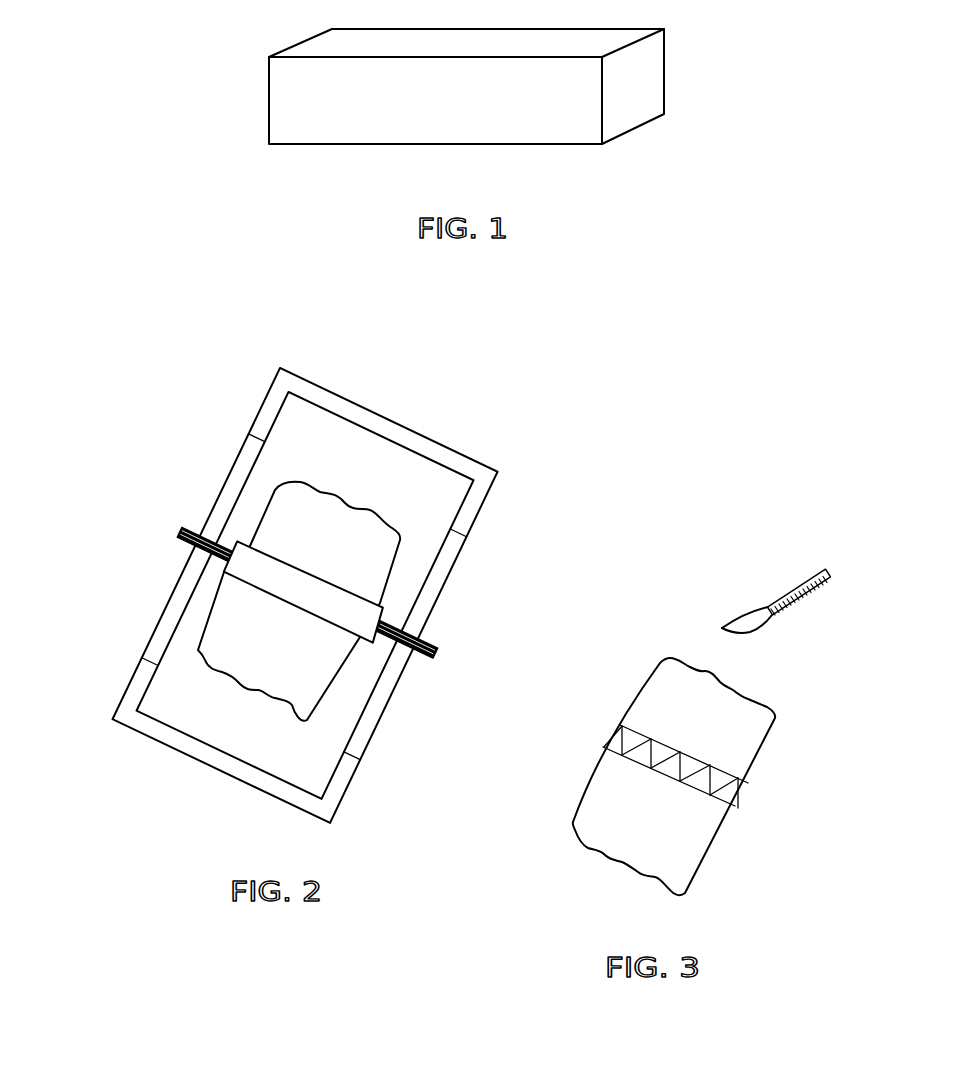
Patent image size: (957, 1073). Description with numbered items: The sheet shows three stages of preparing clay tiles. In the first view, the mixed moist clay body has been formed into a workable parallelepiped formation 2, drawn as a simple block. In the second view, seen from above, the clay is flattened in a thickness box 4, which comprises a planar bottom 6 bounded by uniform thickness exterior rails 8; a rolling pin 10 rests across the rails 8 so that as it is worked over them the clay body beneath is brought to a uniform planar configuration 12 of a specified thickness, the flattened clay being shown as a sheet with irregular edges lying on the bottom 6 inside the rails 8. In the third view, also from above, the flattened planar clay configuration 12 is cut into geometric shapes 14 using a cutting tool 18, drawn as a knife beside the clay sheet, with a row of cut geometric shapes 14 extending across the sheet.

In FIG. 1, the workable parallelepiped formation 2 is at (643, 71).
In FIG. 2, the thickness box 4 is at (356, 592).
In FIG. 2, the planar bottom 6 is at (305, 595).
In FIG. 2, the uniform thickness exterior rails 8 is at (305, 595).
In FIG. 2, the rolling pin 10 is at (373, 618).
In FIG. 2, the uniform planar configuration 12 is at (172, 707).
In FIG. 3, the uniform planar configuration 12 is at (705, 835).
In FIG. 3, the geometric shapes 14 is at (718, 780).
In FIG. 3, the cutting tool 18 is at (775, 597).